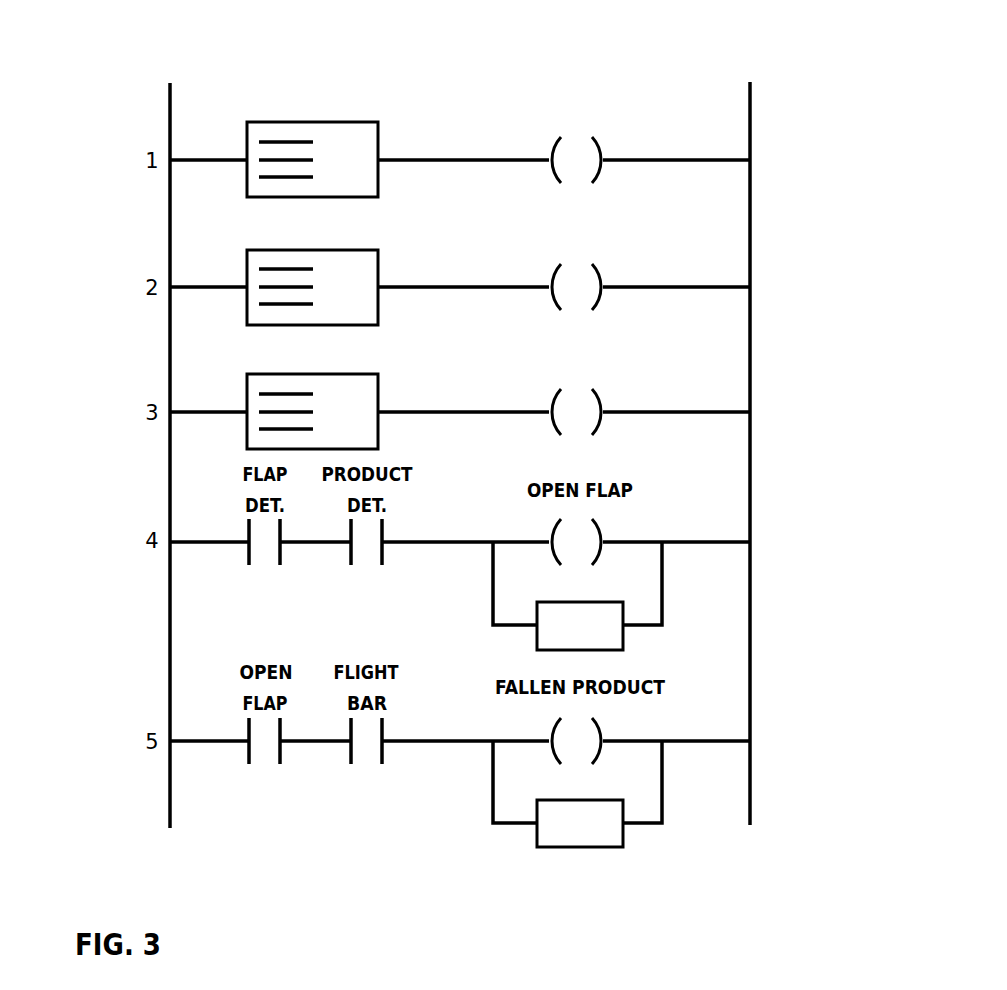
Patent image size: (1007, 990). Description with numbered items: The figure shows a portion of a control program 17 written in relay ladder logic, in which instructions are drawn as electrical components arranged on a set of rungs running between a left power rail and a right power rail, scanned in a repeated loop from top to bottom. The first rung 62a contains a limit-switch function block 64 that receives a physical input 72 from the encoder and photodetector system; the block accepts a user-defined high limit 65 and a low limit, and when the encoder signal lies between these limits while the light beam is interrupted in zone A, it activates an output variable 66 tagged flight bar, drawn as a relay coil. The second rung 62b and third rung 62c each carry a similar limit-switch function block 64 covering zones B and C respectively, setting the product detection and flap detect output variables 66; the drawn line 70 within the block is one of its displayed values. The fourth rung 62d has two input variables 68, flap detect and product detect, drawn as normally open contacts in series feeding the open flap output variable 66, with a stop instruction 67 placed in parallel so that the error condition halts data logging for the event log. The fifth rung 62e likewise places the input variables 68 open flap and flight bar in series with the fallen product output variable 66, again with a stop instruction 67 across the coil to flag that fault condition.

The control program 17 is at (798, 63).
The first rung 62a is at (108, 162).
The second rung 62b is at (108, 287).
The third rung 62c is at (108, 412).
The fourth rung 62d is at (108, 544).
The fifth rung 62e is at (108, 711).
The limit-switch function block 64 is at (348, 122).
The high limit 65 is at (288, 179).
The output variable 66 is at (578, 175).
The stop instruction 67 is at (623, 638).
The input variable 68 is at (268, 557).
The sensor input line 70 is at (288, 140).
The physical input 72 is at (259, 161).